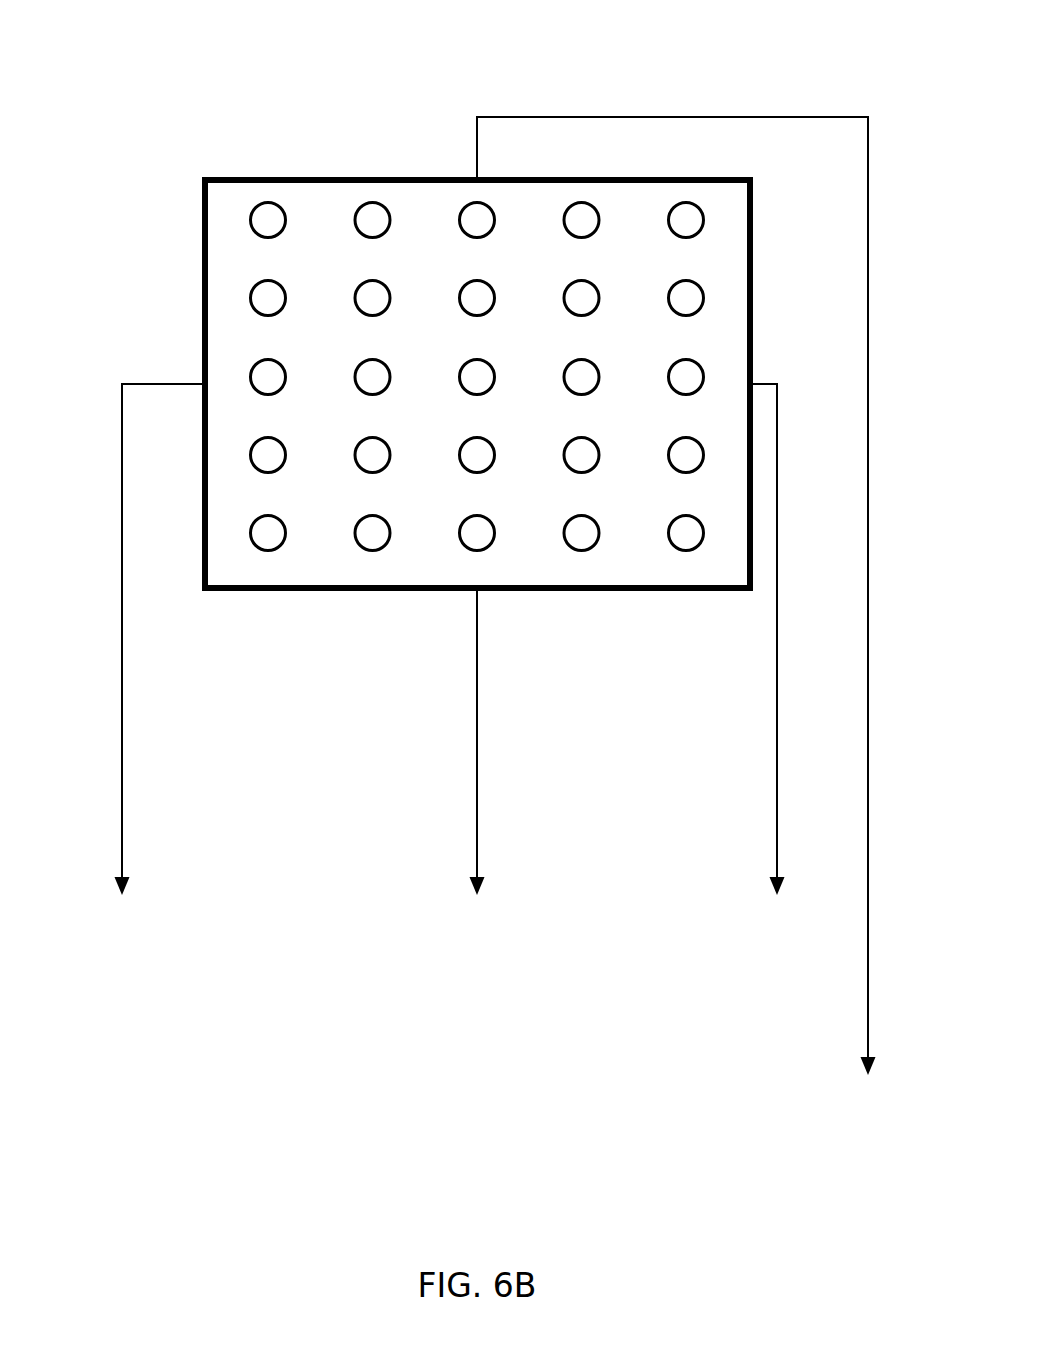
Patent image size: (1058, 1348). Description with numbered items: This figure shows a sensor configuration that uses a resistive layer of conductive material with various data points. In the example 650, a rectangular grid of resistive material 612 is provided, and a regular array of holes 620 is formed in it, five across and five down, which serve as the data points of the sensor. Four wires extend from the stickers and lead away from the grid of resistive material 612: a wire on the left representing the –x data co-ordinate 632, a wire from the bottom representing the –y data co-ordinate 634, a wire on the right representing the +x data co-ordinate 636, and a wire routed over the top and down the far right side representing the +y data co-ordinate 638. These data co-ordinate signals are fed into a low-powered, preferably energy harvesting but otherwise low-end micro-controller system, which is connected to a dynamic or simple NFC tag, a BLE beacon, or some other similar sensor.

The example 650 is at (63, 18).
The grid of resistive material 612 is at (406, 186).
The holes 620 is at (255, 206).
The –x data co-ordinate wire 632 is at (134, 674).
The –y data co-ordinate wire 634 is at (476, 776).
The +x data co-ordinate wire 636 is at (777, 674).
The +y data co-ordinate wire 638 is at (704, 631).